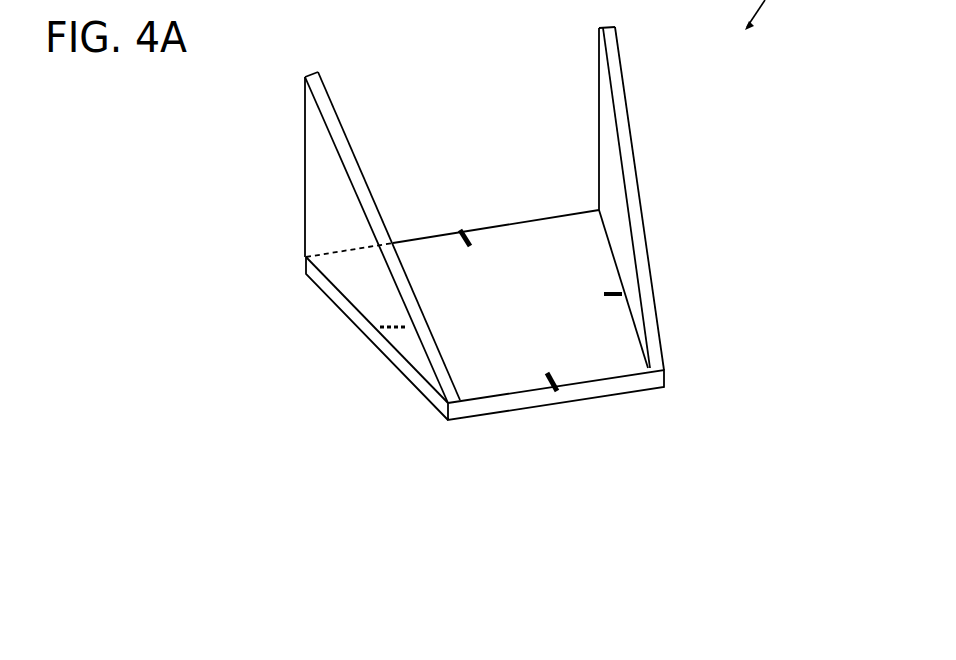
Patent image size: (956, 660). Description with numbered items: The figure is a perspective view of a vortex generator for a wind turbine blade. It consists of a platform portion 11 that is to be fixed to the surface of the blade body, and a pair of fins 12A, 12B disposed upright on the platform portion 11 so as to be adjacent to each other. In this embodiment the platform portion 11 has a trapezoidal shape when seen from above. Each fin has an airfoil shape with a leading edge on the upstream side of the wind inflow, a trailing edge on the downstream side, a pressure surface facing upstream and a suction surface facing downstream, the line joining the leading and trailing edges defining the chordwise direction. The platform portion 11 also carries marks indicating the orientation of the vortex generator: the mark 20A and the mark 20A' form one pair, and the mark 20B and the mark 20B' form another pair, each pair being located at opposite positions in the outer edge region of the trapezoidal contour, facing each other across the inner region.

The platform portion 11 is at (541, 247).
The fin 12A is at (632, 198).
The fin 12B is at (346, 226).
The mark 20A is at (674, 305).
The mark 20A' is at (344, 352).
The mark 20B is at (534, 421).
The mark 20B' is at (474, 200).